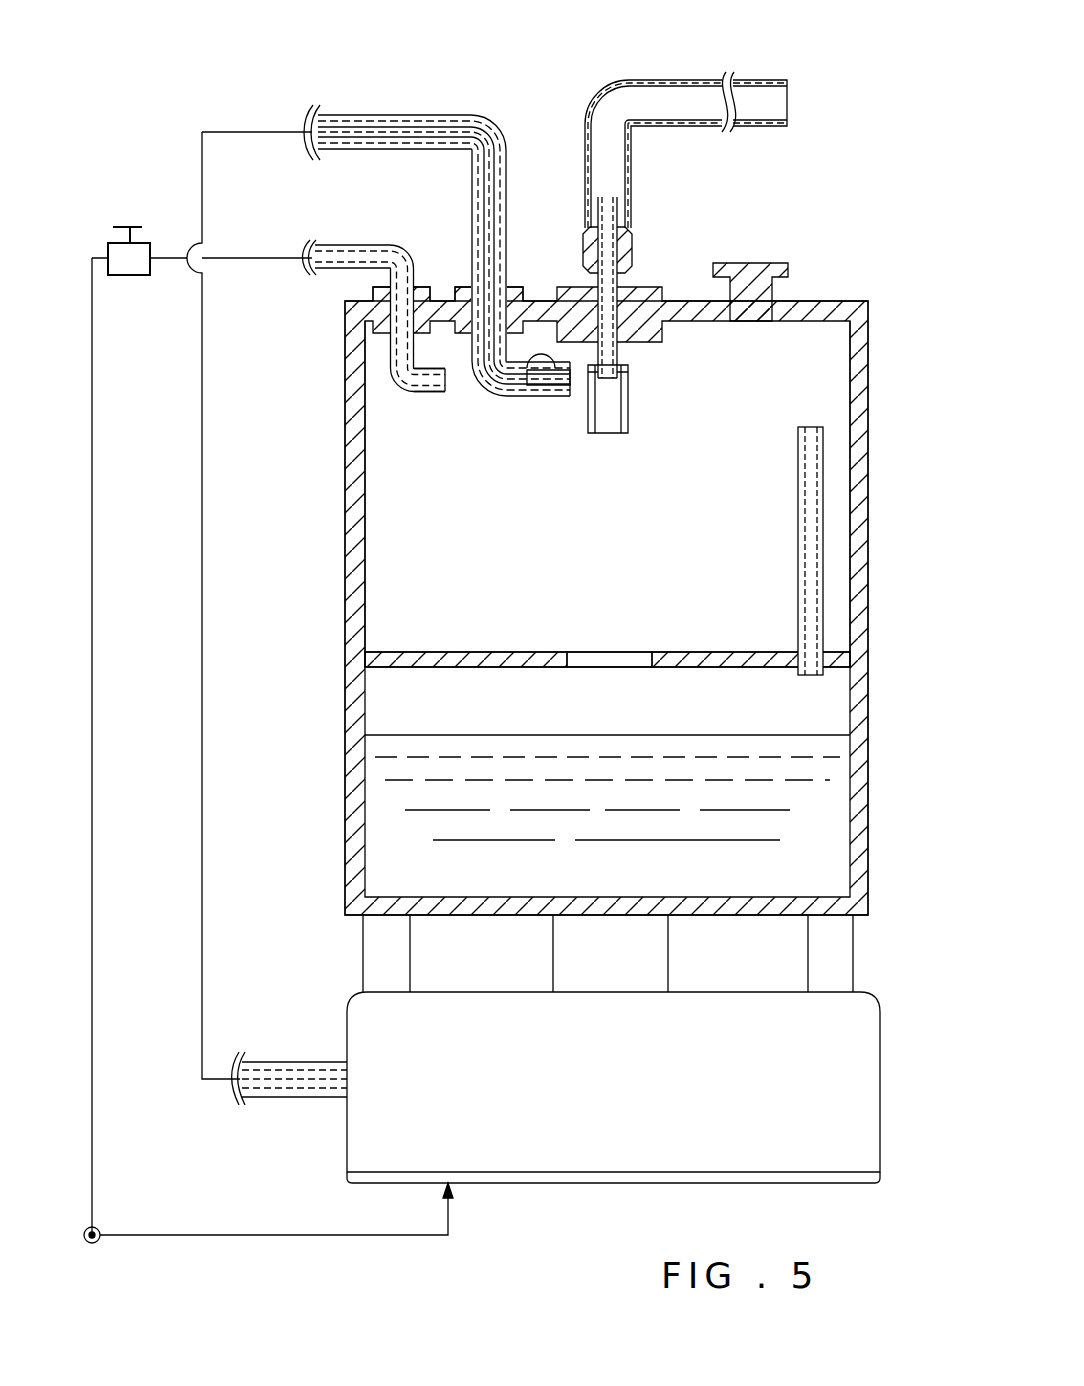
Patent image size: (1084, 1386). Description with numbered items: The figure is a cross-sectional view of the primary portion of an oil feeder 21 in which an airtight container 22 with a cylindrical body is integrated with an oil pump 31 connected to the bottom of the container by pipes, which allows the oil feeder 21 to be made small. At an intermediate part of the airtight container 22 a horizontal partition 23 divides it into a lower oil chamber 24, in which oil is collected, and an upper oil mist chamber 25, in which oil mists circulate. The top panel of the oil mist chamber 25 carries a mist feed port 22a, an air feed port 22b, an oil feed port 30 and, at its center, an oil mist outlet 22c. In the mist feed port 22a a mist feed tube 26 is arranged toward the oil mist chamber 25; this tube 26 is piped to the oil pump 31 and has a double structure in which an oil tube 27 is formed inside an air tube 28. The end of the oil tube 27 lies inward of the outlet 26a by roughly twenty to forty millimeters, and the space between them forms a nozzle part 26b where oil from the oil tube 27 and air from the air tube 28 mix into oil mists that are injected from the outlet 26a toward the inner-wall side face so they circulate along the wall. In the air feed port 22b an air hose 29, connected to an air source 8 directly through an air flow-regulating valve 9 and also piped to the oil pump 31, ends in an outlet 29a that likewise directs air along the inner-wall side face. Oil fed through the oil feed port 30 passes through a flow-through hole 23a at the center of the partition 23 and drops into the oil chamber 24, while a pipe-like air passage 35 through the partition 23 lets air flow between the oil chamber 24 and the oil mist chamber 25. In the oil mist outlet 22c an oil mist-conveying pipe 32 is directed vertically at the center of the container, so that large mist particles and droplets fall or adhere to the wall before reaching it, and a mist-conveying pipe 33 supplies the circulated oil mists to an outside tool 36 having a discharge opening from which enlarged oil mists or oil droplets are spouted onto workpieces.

The air source 8 is at (100, 1240).
The air flow-regulating valve 9 is at (142, 238).
The oil feeder 21 is at (804, 232).
The airtight container 22 is at (832, 307).
The mist feed port 22a is at (508, 275).
The air feed port 22b is at (416, 268).
The oil mist outlet 22c is at (635, 270).
The partition 23 is at (730, 648).
The flow-through hole 23a is at (623, 660).
The oil chamber 24 is at (802, 703).
The oil mist chamber 25 is at (810, 387).
The mist feed tube 26 is at (358, 114).
The outlet 26a is at (560, 397).
The nozzle part 26b is at (530, 372).
The oil tube 27 is at (433, 128).
The air tube 28 is at (507, 148).
The air hose 29 is at (350, 244).
The outlet 29a is at (433, 393).
The oil feed port 30 is at (748, 290).
The oil pump 31 is at (835, 1048).
The oil mist-conveying pipe 32 is at (610, 415).
The mist-conveying pipe 33 is at (670, 95).
The pipe-like air passage 35 is at (810, 527).
The tool 36 is at (770, 92).